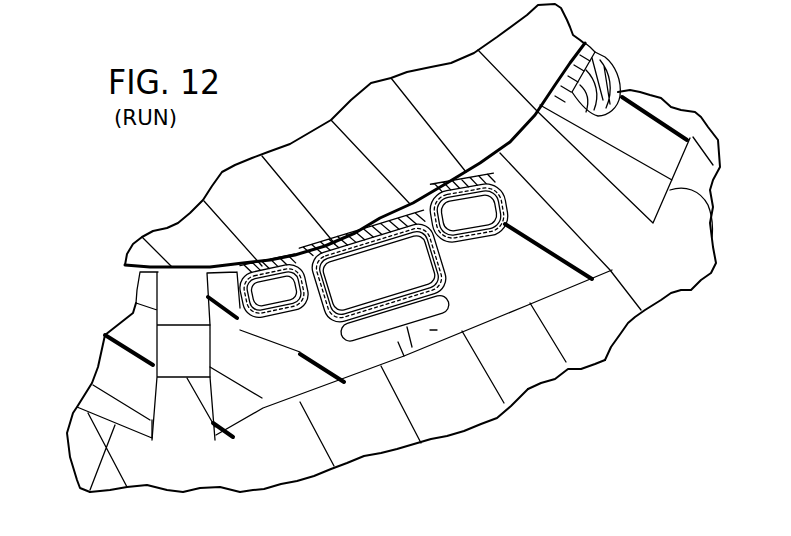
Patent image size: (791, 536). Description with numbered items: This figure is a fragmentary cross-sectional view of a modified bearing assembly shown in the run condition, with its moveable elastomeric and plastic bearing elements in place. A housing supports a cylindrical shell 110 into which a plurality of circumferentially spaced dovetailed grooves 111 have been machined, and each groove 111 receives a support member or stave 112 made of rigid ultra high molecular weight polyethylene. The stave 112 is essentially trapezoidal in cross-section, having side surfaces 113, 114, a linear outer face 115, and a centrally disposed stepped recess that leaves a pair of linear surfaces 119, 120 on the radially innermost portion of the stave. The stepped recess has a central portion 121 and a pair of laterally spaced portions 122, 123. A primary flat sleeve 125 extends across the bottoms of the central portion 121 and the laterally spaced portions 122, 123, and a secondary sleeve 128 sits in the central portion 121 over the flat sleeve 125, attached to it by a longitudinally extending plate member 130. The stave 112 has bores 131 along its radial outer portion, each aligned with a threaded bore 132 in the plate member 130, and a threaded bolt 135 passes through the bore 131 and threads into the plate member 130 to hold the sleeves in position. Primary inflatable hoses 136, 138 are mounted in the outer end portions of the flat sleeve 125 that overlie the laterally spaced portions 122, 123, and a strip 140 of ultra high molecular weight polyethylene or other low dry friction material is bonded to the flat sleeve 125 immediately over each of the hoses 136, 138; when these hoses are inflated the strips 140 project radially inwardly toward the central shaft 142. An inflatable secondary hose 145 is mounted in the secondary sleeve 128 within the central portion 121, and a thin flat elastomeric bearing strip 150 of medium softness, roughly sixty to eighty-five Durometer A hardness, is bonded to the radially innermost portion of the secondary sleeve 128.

The cylindrical shell 110 is at (628, 325).
The dovetailed groove 111 is at (212, 416).
The stave 112 is at (280, 405).
The side surface 113 is at (135, 315).
The side surface 114 is at (530, 130).
The outer face 115 is at (699, 281).
The linear surface 119 is at (215, 268).
The linear surface 120 is at (493, 160).
The central portion of stepped recess 121 is at (414, 368).
The laterally spaced portion of stepped recess 122 is at (473, 242).
The laterally spaced portion of stepped recess 123 is at (285, 322).
The primary flat sleeve 125 is at (450, 280).
The secondary sleeve 128 is at (306, 262).
The plate member 130 is at (367, 327).
The bore 131 is at (412, 347).
The threaded bore 132 is at (437, 330).
The threaded bolt 135 is at (402, 348).
The primary inflatable hose 136 is at (250, 322).
The primary inflatable hose 138 is at (505, 217).
The strip of ultra high molecular weight polyethylene 140 is at (262, 268).
The central shaft 142 is at (413, 80).
The secondary hose 145 is at (367, 270).
The elastomeric bearing strip 150 is at (387, 220).